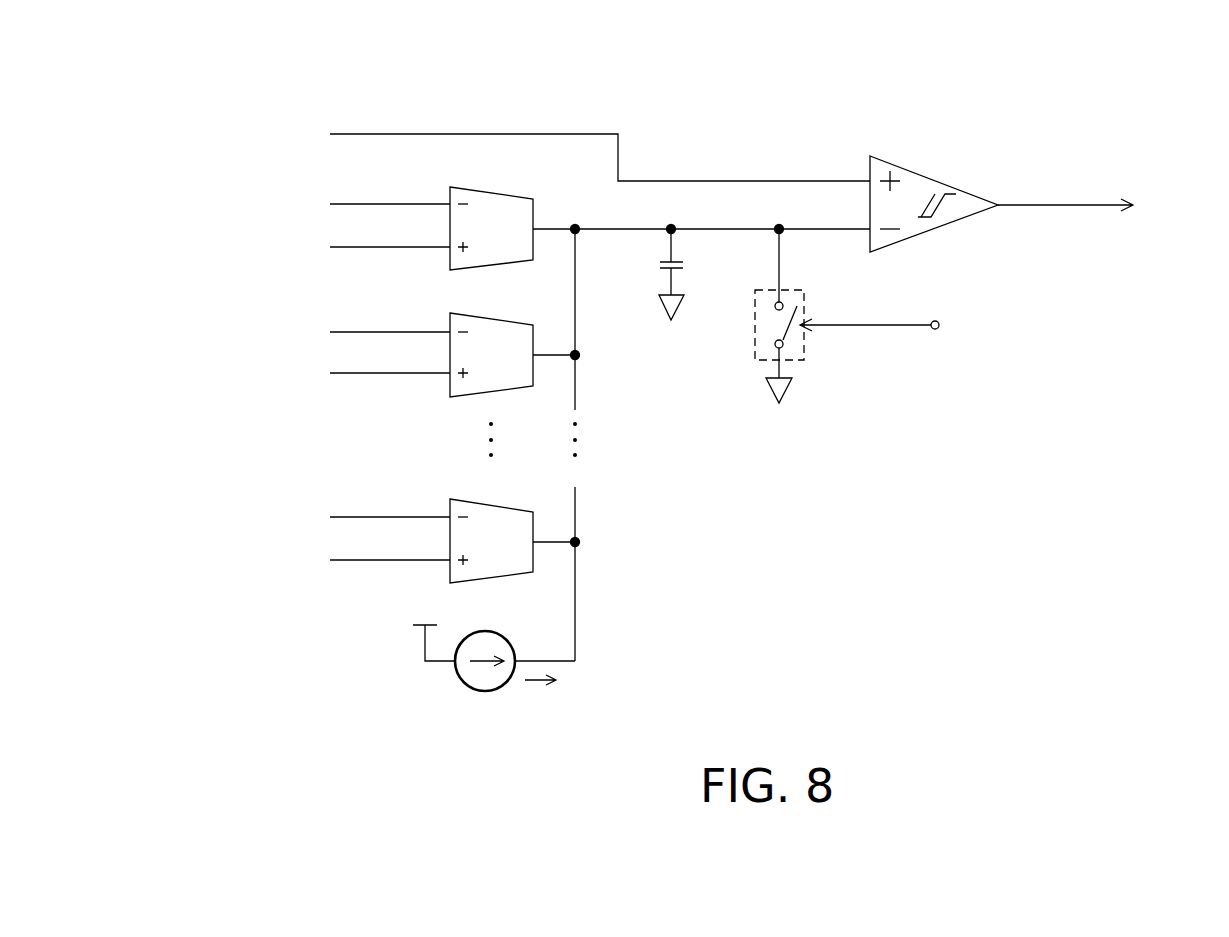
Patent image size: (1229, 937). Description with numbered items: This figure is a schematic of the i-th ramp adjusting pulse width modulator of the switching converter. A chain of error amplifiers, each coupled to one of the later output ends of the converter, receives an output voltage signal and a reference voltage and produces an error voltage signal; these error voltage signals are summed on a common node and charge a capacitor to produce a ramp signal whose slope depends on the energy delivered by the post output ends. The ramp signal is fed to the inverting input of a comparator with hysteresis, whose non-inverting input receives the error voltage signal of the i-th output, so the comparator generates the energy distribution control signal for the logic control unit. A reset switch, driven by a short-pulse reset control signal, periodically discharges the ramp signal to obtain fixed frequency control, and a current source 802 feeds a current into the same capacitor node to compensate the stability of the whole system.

The current source 802 is at (485, 692).